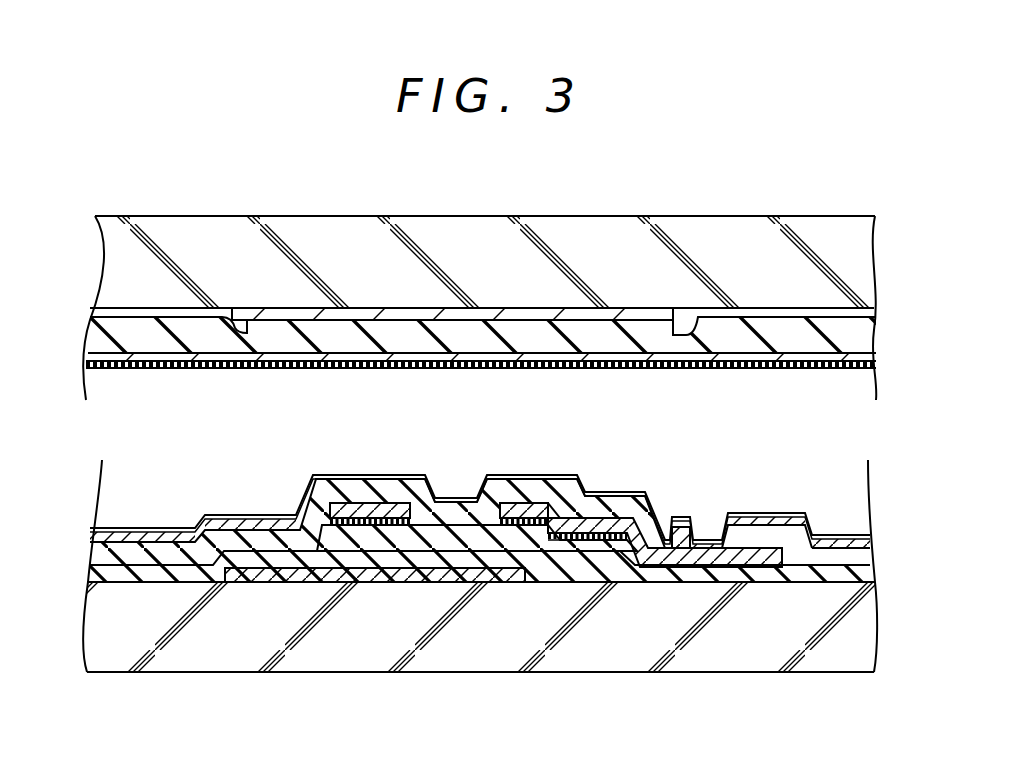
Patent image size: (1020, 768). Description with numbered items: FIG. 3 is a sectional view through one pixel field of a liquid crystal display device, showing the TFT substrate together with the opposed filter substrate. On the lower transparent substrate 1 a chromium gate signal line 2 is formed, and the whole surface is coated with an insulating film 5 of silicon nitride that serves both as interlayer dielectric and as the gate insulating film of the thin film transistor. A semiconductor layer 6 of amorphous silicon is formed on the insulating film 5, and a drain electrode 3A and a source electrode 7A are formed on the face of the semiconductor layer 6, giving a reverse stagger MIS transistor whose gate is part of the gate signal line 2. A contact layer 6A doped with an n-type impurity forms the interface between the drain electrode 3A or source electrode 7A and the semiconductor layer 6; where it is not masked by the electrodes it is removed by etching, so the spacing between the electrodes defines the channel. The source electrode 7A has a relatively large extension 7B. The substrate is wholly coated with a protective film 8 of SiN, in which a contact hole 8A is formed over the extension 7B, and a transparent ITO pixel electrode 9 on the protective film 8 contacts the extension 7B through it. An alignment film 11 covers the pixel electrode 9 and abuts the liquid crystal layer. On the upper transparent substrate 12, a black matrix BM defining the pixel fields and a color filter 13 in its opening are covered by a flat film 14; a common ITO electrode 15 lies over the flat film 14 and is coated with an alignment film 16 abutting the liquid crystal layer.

The transparent substrate 1 is at (870, 625).
The gate signal line 2 is at (263, 578).
The drain electrode 3A is at (352, 478).
The insulating film 5 is at (100, 573).
The semiconductor layer 6 is at (460, 548).
The contact layer 6A is at (360, 525).
The source electrode 7A is at (540, 500).
The extension 7B is at (668, 560).
The protective film 8 is at (860, 556).
The contact hole 8A is at (735, 545).
The pixel electrode 9 is at (115, 528).
The alignment film 11 is at (682, 520).
The transparent substrate 12 is at (857, 261).
The color filter 13 is at (168, 318).
The black matrix BM is at (488, 318).
The flat film 14 is at (860, 340).
The common electrode 15 is at (88, 360).
The alignment film 16 is at (175, 370).